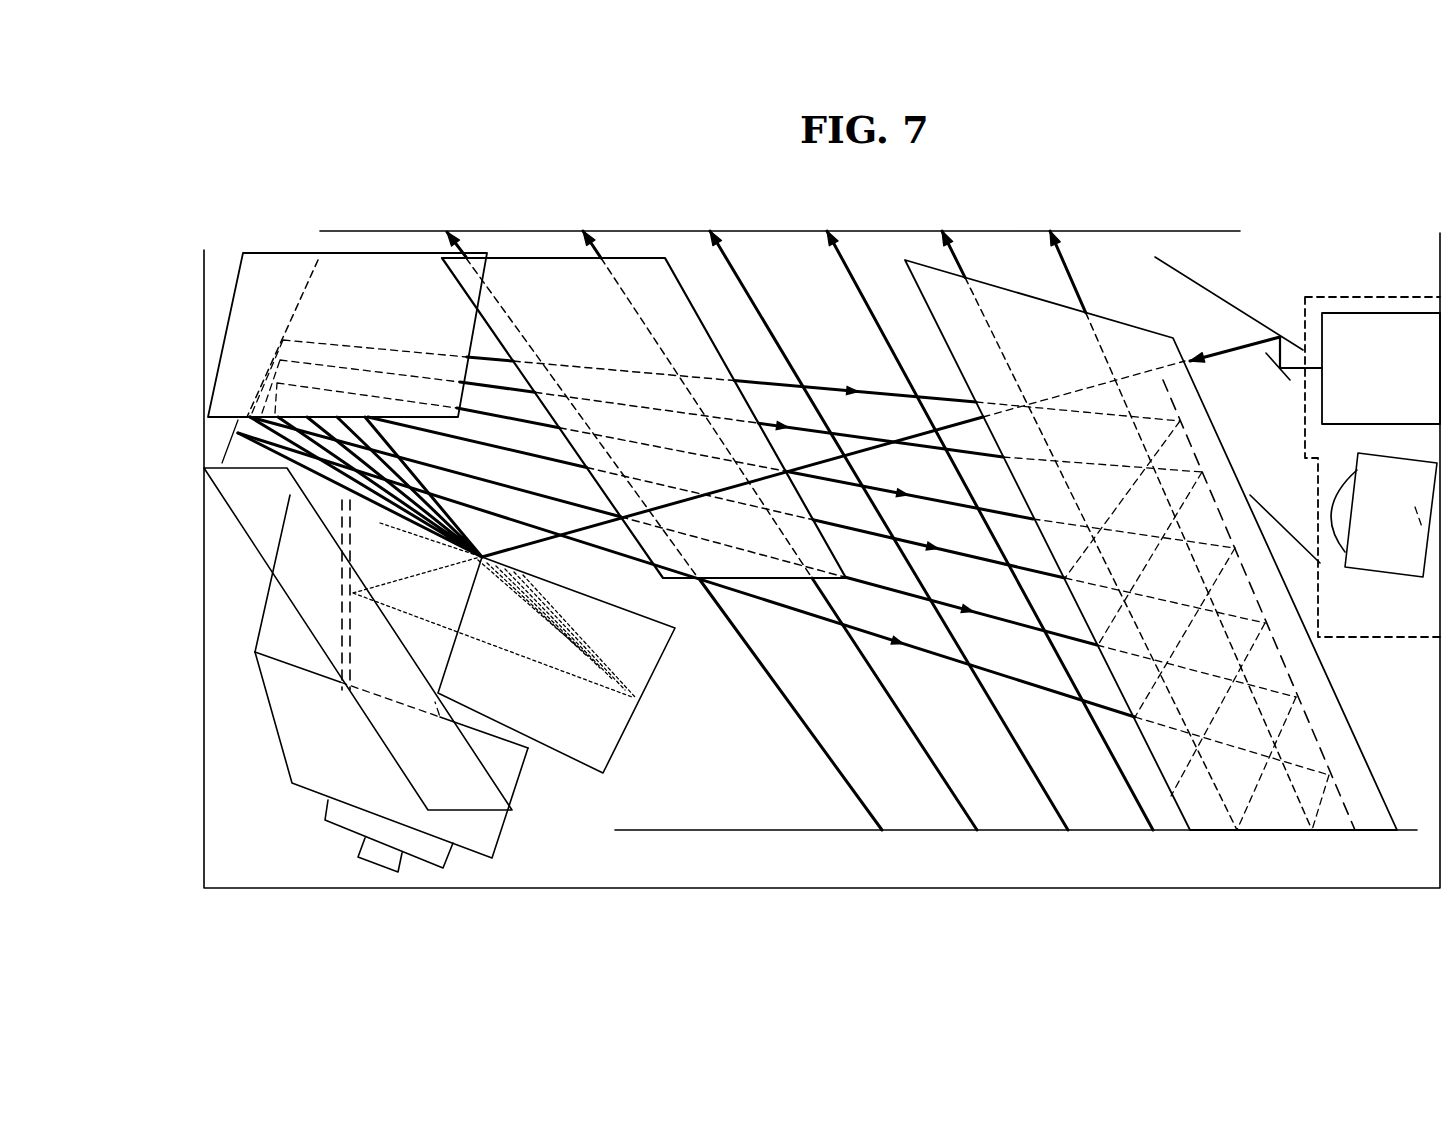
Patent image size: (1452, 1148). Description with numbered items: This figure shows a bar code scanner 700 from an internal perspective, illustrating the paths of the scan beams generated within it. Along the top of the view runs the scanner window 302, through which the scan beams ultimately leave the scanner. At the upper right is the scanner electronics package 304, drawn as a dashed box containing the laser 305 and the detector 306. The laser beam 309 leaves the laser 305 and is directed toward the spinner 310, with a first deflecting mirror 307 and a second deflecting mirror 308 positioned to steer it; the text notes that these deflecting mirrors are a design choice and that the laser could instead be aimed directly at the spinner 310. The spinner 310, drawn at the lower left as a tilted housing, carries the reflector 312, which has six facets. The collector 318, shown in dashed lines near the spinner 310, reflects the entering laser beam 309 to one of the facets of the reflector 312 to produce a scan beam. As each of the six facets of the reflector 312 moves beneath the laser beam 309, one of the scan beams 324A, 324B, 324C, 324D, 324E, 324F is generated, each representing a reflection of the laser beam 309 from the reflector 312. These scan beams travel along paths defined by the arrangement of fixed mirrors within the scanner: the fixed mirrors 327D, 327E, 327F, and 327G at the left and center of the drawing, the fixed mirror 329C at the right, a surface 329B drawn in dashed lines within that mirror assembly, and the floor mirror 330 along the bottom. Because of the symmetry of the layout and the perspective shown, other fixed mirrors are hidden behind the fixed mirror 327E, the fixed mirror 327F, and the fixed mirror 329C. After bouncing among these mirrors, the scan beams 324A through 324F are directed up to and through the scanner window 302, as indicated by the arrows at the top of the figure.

The optical system 700 is at (283, 146).
The scanner window 302 is at (1196, 230).
The scanner electronics package 304 is at (1382, 295).
The laser 305 is at (1408, 378).
The detector 306 is at (1375, 570).
The first deflecting mirror 307 is at (1292, 378).
The second deflecting mirror 308 is at (1195, 275).
The laser beam 309 is at (1235, 345).
The spinner 310 is at (664, 757).
The reflector 312 is at (655, 678).
The collector 318 is at (342, 613).
The scan beam 324A is at (468, 248).
The scan beam 324B is at (598, 257).
The scan beam 324C is at (733, 262).
The scan beam 324D is at (848, 260).
The scan beam 324E is at (966, 262).
The scan beam 324F is at (1070, 262).
The fixed mirror 327D is at (300, 303).
The fixed mirror 327E is at (298, 250).
The fixed mirror 327F is at (228, 510).
The fixed mirror 327G is at (543, 257).
The reflective surface 329B is at (1350, 718).
The fixed mirror 329C is at (1333, 682).
The floor mirror 330 is at (736, 832).